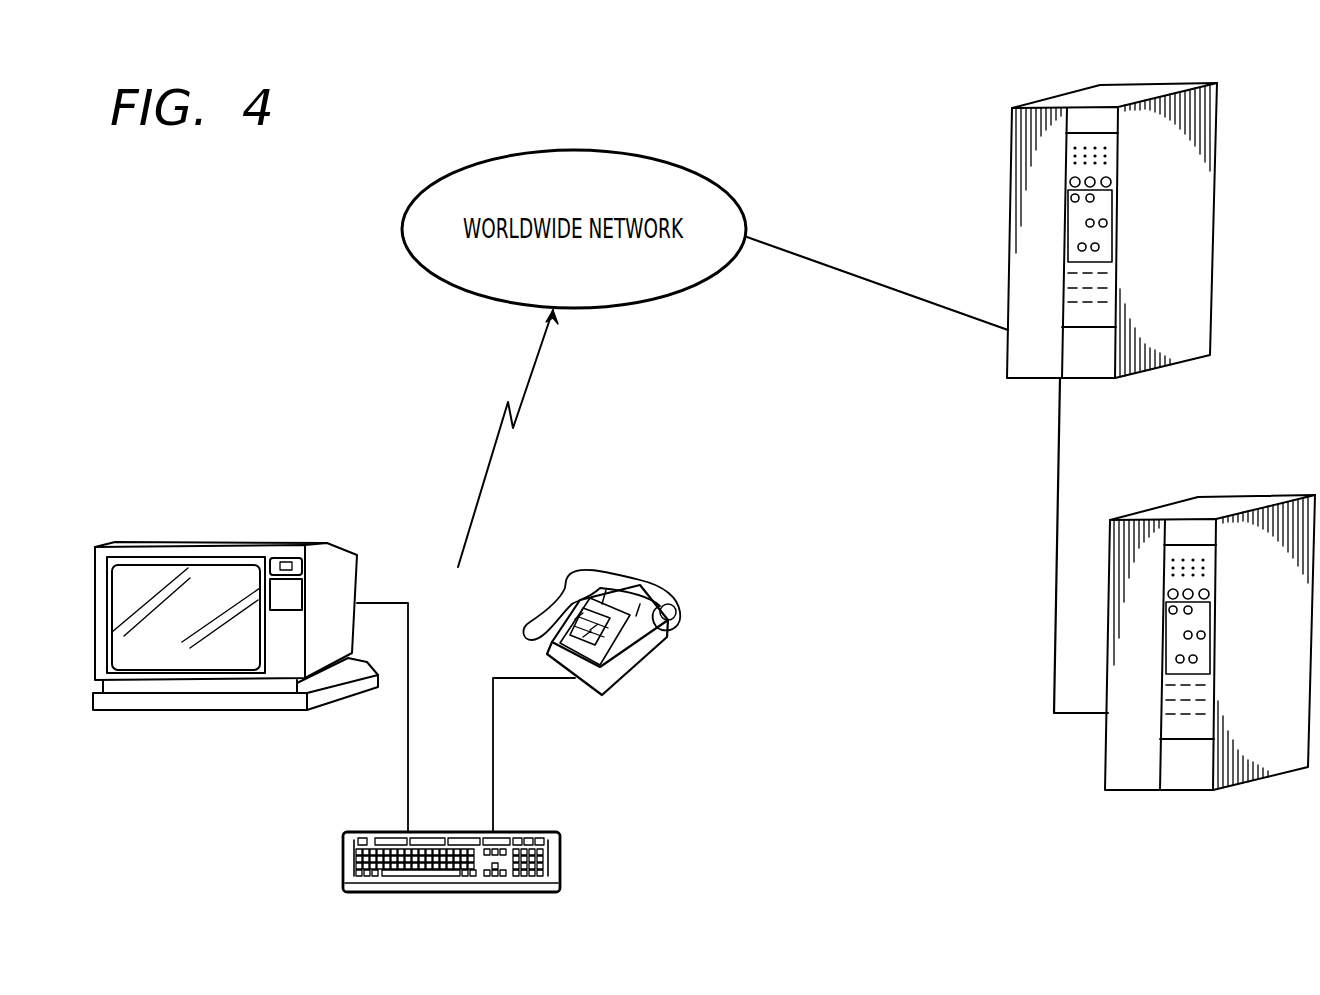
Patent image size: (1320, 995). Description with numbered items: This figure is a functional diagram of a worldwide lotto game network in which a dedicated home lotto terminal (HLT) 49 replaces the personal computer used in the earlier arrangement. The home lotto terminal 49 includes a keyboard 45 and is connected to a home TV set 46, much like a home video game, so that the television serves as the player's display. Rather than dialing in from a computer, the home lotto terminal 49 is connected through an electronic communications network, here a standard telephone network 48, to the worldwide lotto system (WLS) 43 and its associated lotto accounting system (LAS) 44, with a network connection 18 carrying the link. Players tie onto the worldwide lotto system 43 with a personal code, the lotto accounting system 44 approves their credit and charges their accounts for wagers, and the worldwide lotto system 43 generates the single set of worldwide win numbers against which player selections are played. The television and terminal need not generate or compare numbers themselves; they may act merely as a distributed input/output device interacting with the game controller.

The local network connection 18 is at (1057, 490).
The worldwide lotto system 43 is at (1113, 90).
The lotto accounting system 44 is at (1130, 765).
The keyboard 45 is at (343, 866).
The home TV set 46 is at (225, 541).
The standard telephone network 48 is at (617, 668).
The home lotto terminal 49 is at (555, 870).